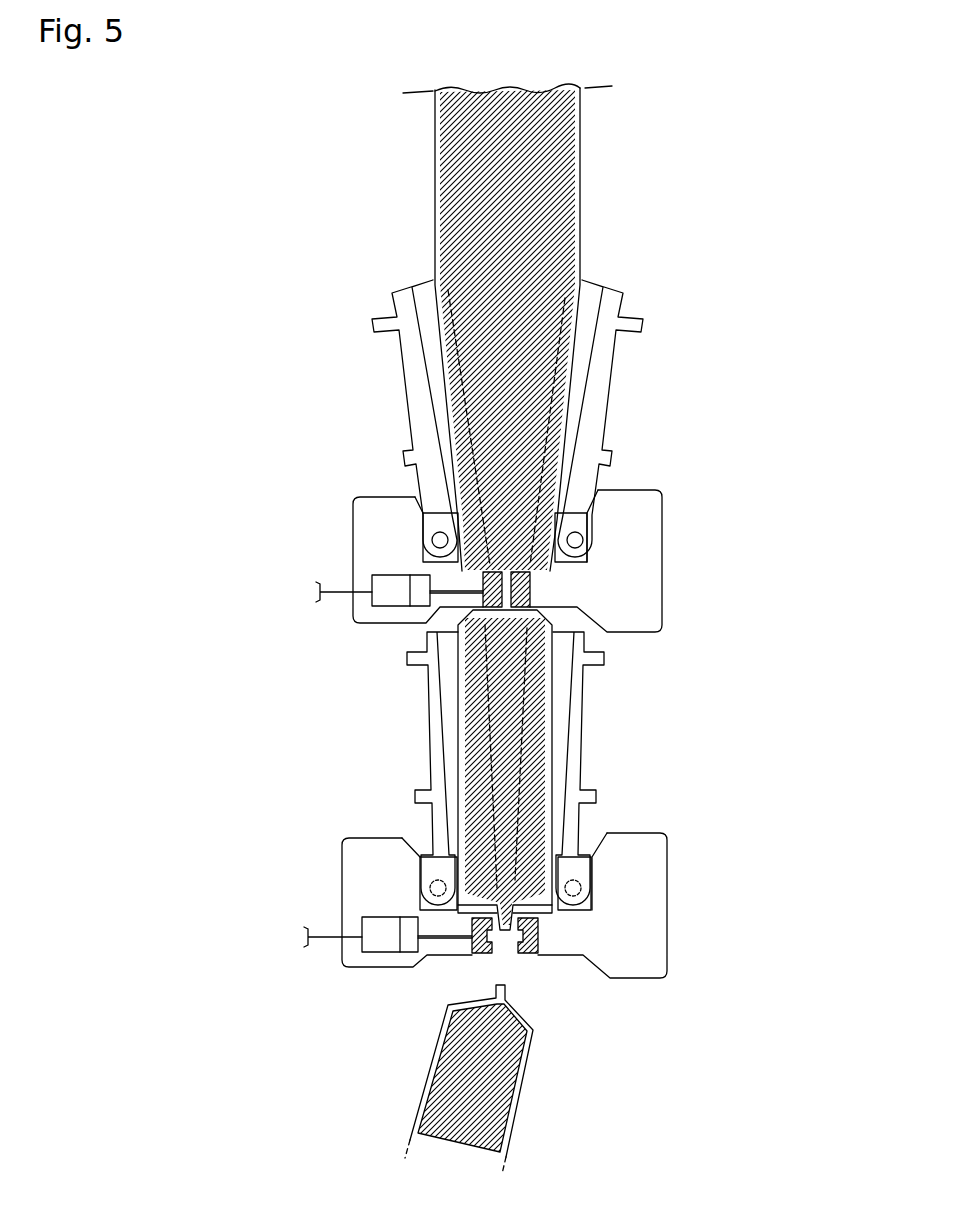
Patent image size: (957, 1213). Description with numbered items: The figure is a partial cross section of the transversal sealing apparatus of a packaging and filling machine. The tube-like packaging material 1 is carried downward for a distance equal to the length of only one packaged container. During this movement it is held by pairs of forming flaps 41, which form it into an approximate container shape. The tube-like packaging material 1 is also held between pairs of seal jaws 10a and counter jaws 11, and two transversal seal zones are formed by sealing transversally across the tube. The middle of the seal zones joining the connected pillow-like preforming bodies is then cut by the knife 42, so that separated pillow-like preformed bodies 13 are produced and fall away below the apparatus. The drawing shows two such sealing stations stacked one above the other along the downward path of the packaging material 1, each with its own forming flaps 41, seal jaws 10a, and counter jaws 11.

The tube-like packaging material 1 is at (428, 200).
The forming flaps 41 is at (402, 362).
The counter jaws 11 is at (395, 554).
The seal jaws 10a is at (590, 582).
The knife 42 is at (453, 938).
The pillow-like preformed bodies 13 is at (525, 1083).